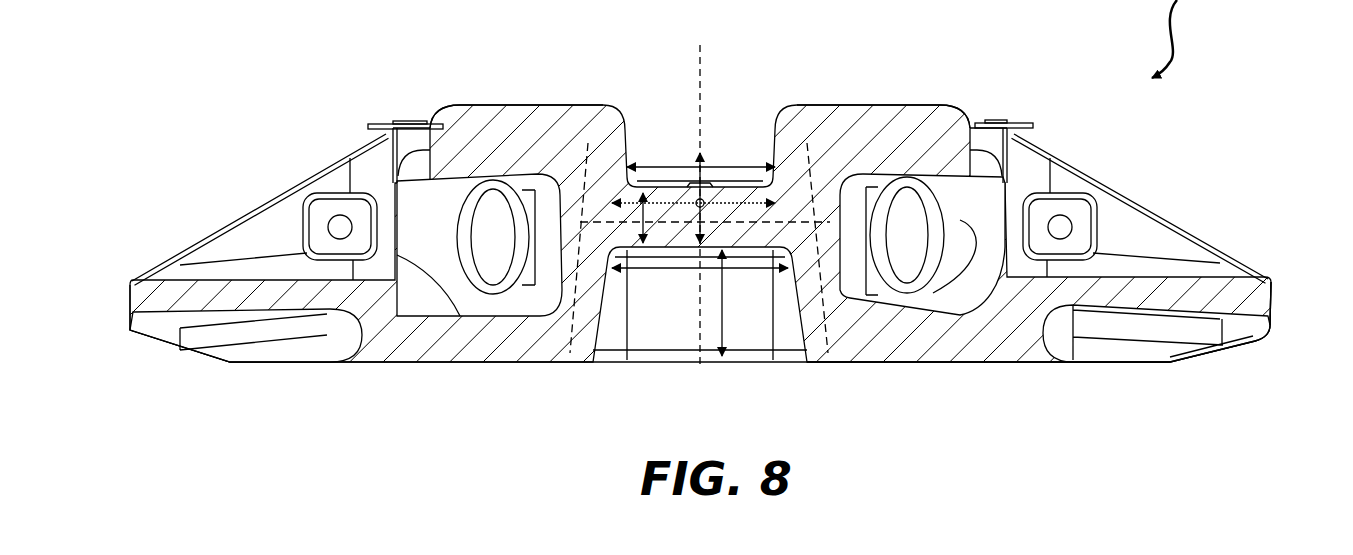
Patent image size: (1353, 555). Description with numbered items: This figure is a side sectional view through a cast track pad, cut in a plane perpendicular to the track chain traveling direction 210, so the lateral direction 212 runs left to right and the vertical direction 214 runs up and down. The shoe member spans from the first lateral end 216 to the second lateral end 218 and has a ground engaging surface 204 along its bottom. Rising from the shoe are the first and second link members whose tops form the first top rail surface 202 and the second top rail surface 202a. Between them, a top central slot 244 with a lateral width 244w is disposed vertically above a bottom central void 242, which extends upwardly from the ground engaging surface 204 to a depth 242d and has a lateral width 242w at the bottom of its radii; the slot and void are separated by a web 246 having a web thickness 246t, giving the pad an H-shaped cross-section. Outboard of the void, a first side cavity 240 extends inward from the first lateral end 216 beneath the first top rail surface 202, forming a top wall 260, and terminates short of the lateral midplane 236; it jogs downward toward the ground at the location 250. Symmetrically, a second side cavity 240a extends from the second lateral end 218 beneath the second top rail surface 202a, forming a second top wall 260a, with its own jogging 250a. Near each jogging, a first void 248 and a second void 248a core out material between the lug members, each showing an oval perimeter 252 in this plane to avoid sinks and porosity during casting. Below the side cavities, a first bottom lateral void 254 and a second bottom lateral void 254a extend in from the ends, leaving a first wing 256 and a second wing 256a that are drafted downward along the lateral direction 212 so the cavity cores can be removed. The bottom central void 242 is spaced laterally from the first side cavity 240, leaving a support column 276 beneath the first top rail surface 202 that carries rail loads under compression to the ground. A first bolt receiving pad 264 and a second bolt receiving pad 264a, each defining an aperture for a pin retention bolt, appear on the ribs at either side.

The first top rail surface 202 is at (537, 140).
The second top rail surface 202a is at (945, 128).
The ground engaging surface 204 is at (1000, 363).
The track chain traveling direction 210 is at (706, 212).
The lateral direction 212 is at (805, 145).
The vertical direction 214 is at (702, 198).
The first lateral end 216 is at (120, 335).
The second lateral end 218 is at (1268, 303).
The lateral midplane 236 is at (703, 43).
The first side cavity 240 is at (380, 185).
The second side cavity 240a is at (987, 207).
The bottom central void 242 is at (753, 333).
The lateral width of the bottom central void 242w is at (640, 270).
The depth of the bottom central void 242d is at (723, 300).
The top central slot 244 is at (670, 143).
The lateral width of the top central slot 244w is at (777, 160).
The web 246 is at (667, 237).
The web thickness 246t is at (660, 187).
The first void 248 is at (497, 223).
The second void 248a is at (913, 223).
The jogging of the first side cavity 250 is at (427, 223).
The jogging of the second side cavity 250a is at (960, 220).
The oval perimeter 252 is at (497, 267).
The first bottom lateral void 254 is at (267, 333).
The second bottom lateral void 254a is at (1153, 345).
The first wing 256 is at (223, 300).
The second wing 256a is at (1170, 293).
The top wall 260 is at (455, 150).
The second top wall 260a is at (888, 137).
The first bolt receiving pad 264 is at (323, 210).
The second bolt receiving pad 264a is at (1080, 227).
The support column 276 is at (574, 227).